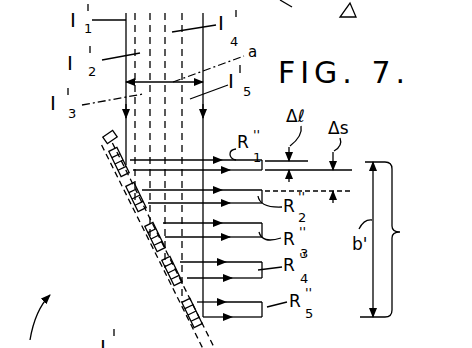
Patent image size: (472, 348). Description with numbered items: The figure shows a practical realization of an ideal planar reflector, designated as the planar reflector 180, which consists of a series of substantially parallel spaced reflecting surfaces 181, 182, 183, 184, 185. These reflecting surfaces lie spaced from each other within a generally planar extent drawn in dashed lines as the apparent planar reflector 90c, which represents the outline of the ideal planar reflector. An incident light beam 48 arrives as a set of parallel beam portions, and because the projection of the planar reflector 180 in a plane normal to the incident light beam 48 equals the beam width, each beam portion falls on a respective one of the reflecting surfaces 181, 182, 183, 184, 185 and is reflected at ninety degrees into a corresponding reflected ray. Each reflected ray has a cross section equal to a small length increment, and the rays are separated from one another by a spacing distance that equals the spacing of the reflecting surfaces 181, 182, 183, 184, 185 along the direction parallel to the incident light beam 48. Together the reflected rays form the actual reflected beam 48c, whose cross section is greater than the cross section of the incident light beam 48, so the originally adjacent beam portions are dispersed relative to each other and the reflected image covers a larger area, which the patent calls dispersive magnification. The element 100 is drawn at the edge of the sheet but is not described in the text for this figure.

The incident light beam 48 is at (188, 133).
The actual reflected beam 48c is at (401, 234).
The apparent planar reflector 90c is at (104, 141).
The reference element 100 is at (357, 10).
The planar reflector 180 is at (34, 321).
The reflecting surface 181 is at (112, 168).
The reflecting surface 182 is at (131, 196).
The reflecting surface 183 is at (146, 234).
The reflecting surface 184 is at (165, 273).
The reflecting surface 185 is at (183, 314).